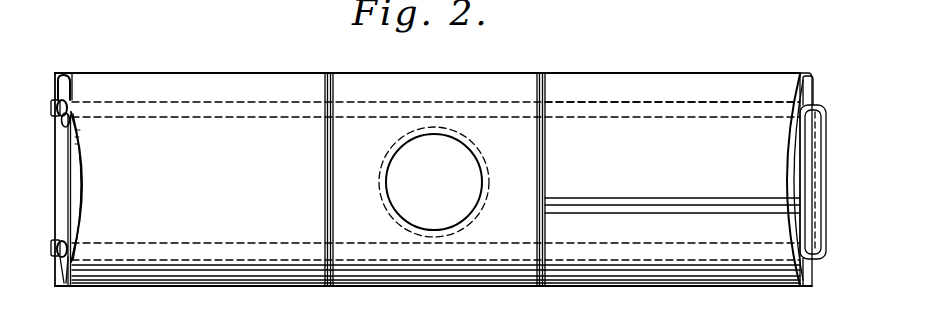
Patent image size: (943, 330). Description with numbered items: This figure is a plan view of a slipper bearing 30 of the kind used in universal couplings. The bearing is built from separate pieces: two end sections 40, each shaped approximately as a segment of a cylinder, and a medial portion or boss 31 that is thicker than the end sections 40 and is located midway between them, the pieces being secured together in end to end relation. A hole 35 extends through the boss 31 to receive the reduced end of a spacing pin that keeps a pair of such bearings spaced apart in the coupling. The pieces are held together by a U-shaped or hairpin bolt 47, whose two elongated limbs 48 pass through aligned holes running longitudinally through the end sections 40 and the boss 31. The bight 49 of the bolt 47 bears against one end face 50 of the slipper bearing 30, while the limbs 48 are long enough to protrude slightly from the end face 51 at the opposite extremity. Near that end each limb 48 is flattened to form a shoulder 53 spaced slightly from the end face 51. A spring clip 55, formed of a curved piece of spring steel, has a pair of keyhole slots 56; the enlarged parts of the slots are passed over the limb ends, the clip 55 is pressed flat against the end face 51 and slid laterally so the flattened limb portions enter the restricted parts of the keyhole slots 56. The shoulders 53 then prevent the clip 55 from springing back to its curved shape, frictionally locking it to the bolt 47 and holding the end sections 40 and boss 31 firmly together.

The slipper bearing 30 is at (282, 65).
The boss 31 is at (478, 82).
The hole 35 is at (405, 152).
The end section 40 is at (136, 75).
The hairpin bolt 47 is at (709, 96).
The limb 48 is at (252, 117).
The bight 49 is at (810, 162).
The end face 50 is at (810, 80).
The end face 51 is at (78, 172).
The shoulder 53 is at (56, 100).
The spring clip 55 is at (62, 193).
The keyhole slot 56 is at (70, 118).